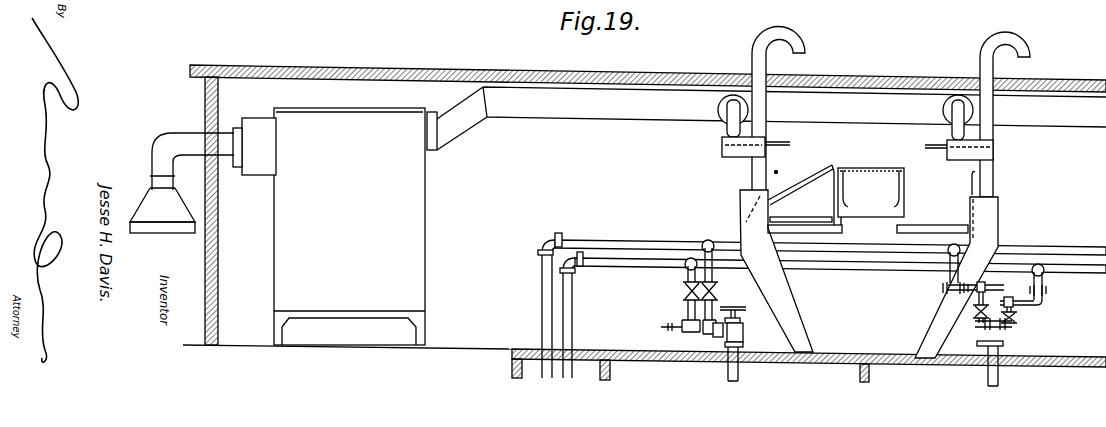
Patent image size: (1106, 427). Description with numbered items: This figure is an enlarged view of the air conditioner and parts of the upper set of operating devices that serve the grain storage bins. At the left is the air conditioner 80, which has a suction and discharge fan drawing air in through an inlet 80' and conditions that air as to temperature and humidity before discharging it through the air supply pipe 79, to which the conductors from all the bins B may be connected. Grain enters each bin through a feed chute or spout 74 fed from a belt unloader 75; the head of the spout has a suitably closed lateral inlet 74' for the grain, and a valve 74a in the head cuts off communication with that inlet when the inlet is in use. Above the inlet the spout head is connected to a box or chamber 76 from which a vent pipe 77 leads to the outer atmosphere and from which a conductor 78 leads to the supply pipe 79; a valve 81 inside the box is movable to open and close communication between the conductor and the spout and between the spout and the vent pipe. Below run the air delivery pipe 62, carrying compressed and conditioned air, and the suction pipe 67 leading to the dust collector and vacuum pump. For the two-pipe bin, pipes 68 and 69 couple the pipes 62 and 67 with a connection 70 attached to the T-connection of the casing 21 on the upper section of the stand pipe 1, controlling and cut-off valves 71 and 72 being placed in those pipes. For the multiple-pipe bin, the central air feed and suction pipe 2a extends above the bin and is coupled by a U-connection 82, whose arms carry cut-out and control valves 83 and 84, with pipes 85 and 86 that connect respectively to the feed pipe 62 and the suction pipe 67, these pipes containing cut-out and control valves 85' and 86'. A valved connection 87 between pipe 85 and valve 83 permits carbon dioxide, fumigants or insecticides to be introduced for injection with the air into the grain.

The vent pipe 77 is at (790, 35).
The conductor 78 is at (718, 120).
The box or chamber 76 is at (721, 149).
The valve 81 is at (787, 144).
The air supply pipe 79 is at (533, 118).
The air conditioner 80 is at (335, 226).
The inlet 80' is at (175, 183).
The feed chute or spout 74 is at (782, 271).
The valve 74a is at (775, 173).
The lateral inlet 74' is at (804, 196).
The belt unloader 75 is at (863, 173).
The air delivery pipe 62 is at (667, 243).
The suction pipe 67 is at (592, 261).
The pipe 68 is at (716, 255).
The pipe 69 is at (687, 277).
The controlling and cut-off valve 71 is at (713, 299).
The controlling and cut-off valve 72 is at (683, 297).
The casing 21 is at (745, 333).
The pipe 1 is at (739, 372).
The bin B is at (627, 352).
The connection 70 is at (692, 361).
The pipe 85 is at (951, 274).
The cut-out and control valve 85' is at (930, 294).
The pipe 86 is at (1041, 270).
The cut-out and control valve 86' is at (1056, 292).
The valved connection 87 is at (989, 255).
The cut-out and control valve 83 is at (979, 312).
The cut-out and control valve 84 is at (1015, 313).
The U-connection 82 is at (1010, 336).
The air feed and suction pipe 2a is at (963, 358).